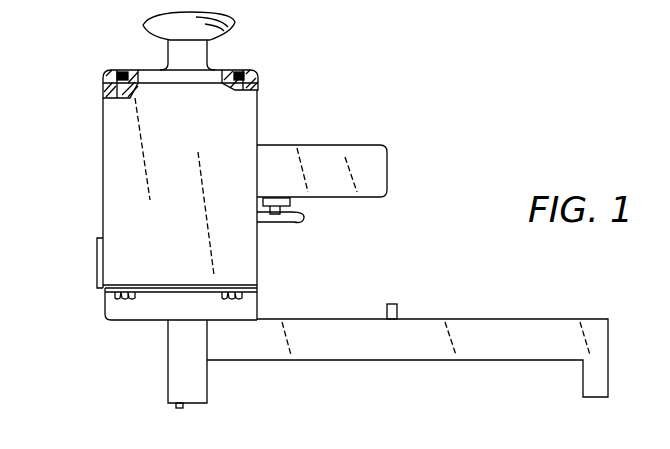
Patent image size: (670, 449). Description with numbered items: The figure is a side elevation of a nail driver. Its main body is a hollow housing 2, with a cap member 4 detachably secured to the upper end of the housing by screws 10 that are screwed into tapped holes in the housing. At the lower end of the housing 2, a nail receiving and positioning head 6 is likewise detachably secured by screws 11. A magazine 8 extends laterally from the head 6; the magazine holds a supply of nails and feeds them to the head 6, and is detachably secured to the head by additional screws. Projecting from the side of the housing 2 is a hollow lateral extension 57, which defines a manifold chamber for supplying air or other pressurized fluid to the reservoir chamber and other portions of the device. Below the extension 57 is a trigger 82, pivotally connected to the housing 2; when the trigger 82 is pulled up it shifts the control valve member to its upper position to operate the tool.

The hollow housing 2 is at (103, 160).
The cap member 4 is at (133, 70).
The screws 10 is at (118, 72).
The hollow lateral extension 57 is at (330, 145).
The trigger 82 is at (298, 222).
The screws 11 is at (112, 296).
The nail receiving and positioning head 6 is at (142, 322).
The magazine 8 is at (505, 318).